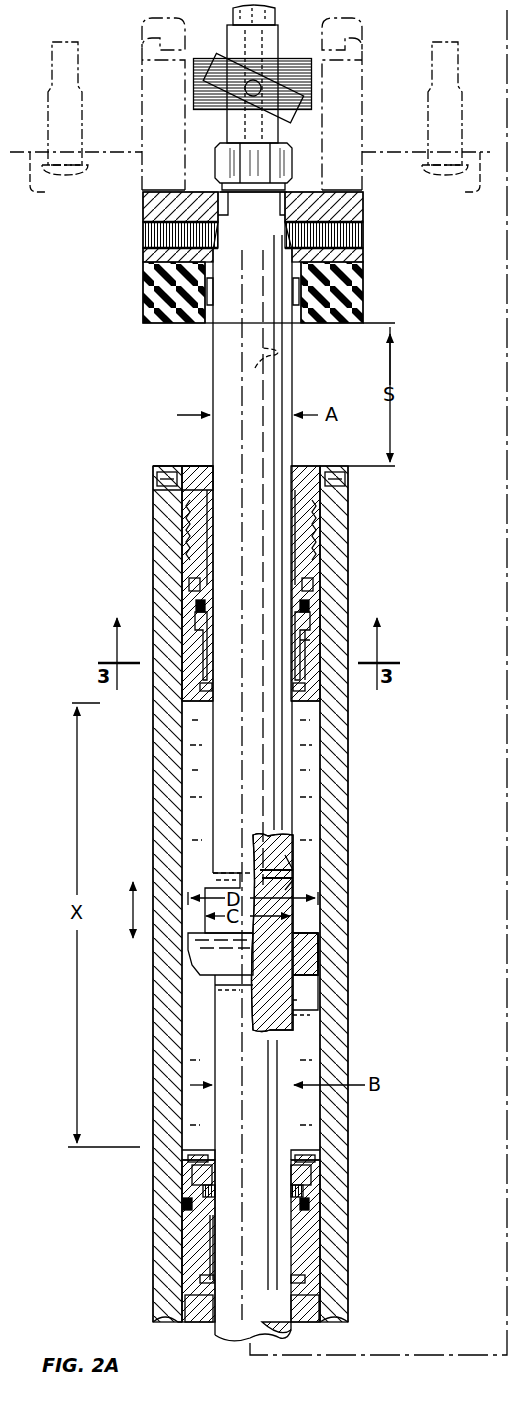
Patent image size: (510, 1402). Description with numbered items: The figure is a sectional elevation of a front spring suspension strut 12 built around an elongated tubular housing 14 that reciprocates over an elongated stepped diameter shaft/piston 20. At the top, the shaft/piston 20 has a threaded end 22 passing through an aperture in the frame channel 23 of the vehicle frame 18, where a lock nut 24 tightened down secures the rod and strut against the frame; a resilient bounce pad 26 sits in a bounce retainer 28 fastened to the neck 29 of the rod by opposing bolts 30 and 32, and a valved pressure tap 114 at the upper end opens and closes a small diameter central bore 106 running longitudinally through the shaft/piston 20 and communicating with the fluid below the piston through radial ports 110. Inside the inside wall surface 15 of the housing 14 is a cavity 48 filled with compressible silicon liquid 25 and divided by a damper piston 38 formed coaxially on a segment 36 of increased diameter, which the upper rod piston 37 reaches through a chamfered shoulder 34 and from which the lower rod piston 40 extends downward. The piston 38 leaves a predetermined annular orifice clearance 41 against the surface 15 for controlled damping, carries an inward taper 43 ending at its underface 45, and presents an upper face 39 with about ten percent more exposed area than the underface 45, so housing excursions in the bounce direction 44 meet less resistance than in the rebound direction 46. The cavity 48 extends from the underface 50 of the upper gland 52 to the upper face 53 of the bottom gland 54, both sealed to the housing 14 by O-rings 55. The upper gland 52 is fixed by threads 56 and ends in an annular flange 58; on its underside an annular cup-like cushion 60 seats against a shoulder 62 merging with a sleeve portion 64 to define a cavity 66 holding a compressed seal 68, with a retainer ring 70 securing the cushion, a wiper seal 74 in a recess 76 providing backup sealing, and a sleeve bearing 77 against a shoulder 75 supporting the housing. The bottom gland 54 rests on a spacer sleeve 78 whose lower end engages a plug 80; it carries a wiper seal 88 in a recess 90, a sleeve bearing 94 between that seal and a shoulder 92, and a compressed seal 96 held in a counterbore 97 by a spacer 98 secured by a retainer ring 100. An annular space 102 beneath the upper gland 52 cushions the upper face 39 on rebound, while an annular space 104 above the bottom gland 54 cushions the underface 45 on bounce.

The suspension strut 12 is at (362, 1003).
The tubular housing 14 is at (335, 756).
The inside wall surface 15 is at (322, 815).
The frame 18 is at (378, 65).
The shaft/piston 20 is at (205, 372).
The threaded end 22 is at (278, 45).
The frame channel 23 is at (325, 128).
The lock nut 24 is at (220, 155).
The compressible silicon liquid 25 is at (325, 768).
The bounce pad 26 is at (365, 296).
The bounce retainer 28 is at (330, 220).
The neck 29 is at (335, 205).
The bolt 30 is at (345, 240).
The bolt 32 is at (143, 240).
The chamfered shoulder 34 is at (205, 885).
The segment of increased diameter 36 is at (310, 886).
The upper rod piston 37 is at (293, 455).
The damper piston 38 is at (322, 932).
The upper face 39 is at (190, 940).
The lower rod piston 40 is at (278, 1108).
The annular orifice clearance 41 is at (215, 980).
The inward taper 43 is at (320, 965).
The bounce direction arrow 44 is at (133, 880).
The underface 45 is at (320, 985).
The rebound direction arrow 46 is at (133, 940).
The cavity 48 is at (322, 790).
The underface of upper gland 50 is at (322, 705).
The upper gland 52 is at (322, 528).
The upper face of bottom gland 53 is at (322, 1145).
The bottom gland 54 is at (322, 1245).
The O-ring 55 is at (310, 606).
The threads 56 is at (188, 542).
The annular flange 58 is at (182, 468).
The cushion 60 is at (292, 648).
The shoulder 62 is at (320, 640).
The sleeve portion 64 is at (322, 572).
The cavity 66 is at (195, 605).
The compressed seal 68 is at (182, 622).
The retainer ring 70 is at (310, 690).
The wiper seal 74 is at (157, 480).
The shoulder 75 is at (194, 580).
The recess 76 is at (345, 480).
The sleeve bearing 77 is at (188, 522).
The spacer sleeve 78 is at (310, 1305).
The plug 80 is at (300, 852).
The wiper seal 88 is at (200, 1278).
The recess 90 is at (308, 1278).
The shoulder 92 is at (182, 1205).
The sleeve bearing 94 is at (205, 1232).
The compressed seal 96 is at (305, 1175).
The counterbore 97 is at (318, 1222).
The spacer 98 is at (322, 1160).
The retainer ring 100 is at (182, 1172).
The annular space 102 is at (182, 720).
The annular space 104 is at (182, 1140).
The central bore 106 is at (285, 358).
The radial ports 110 is at (300, 1020).
The valved pressure tap 114 is at (272, 72).